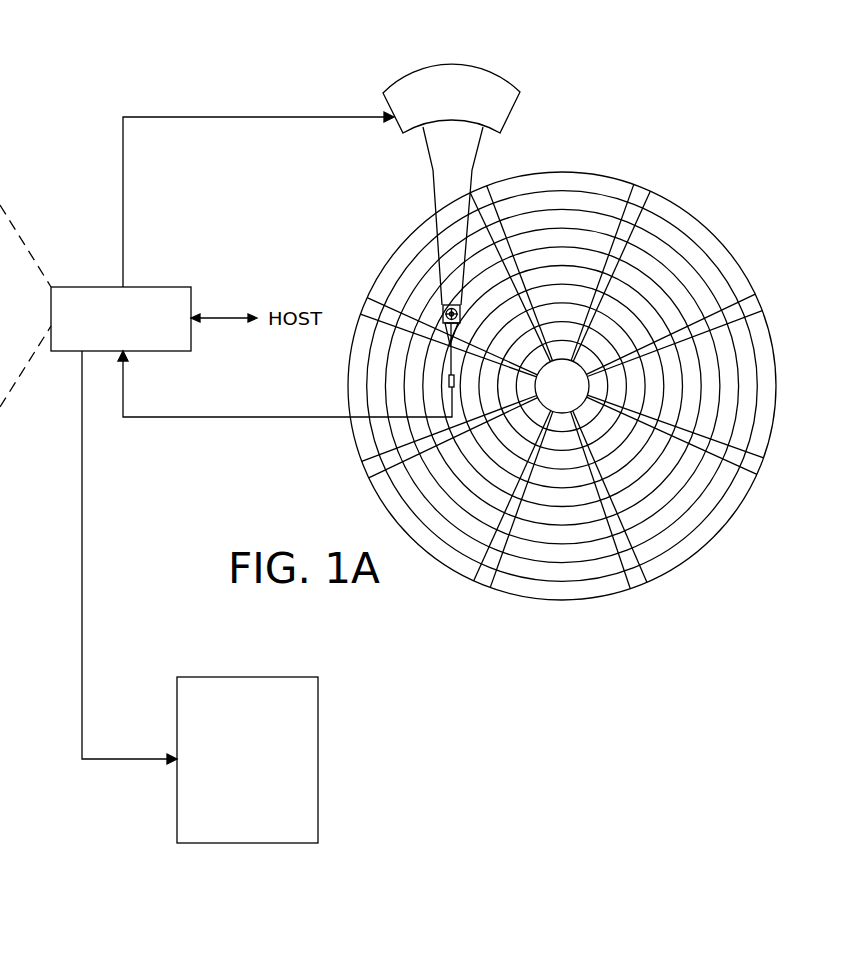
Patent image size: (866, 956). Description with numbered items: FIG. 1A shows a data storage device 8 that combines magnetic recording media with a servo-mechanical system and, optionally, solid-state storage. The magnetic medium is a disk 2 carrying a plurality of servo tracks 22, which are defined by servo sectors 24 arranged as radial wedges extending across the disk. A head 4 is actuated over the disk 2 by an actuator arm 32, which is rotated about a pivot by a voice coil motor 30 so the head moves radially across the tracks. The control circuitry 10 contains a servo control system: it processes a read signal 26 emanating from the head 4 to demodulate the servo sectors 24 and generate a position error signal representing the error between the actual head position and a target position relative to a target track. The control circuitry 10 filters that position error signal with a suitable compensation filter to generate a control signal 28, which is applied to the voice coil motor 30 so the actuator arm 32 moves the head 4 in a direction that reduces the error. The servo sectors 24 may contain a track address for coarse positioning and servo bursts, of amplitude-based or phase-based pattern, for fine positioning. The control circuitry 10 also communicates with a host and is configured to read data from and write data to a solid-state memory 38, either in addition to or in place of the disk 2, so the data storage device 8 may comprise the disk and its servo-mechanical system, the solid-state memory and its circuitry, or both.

The disk 2 is at (566, 383).
The head 4 is at (440, 385).
The data storage device 8 is at (588, 736).
The control circuitry 10 is at (160, 287).
The servo tracks 22 is at (560, 200).
The servo sectors 24 is at (566, 391).
The read signal 26 is at (247, 418).
The control signal 28 is at (123, 186).
The voice coil motor 30 is at (391, 134).
The actuator arm 32 is at (432, 186).
The solid-state memory 38 is at (318, 730).